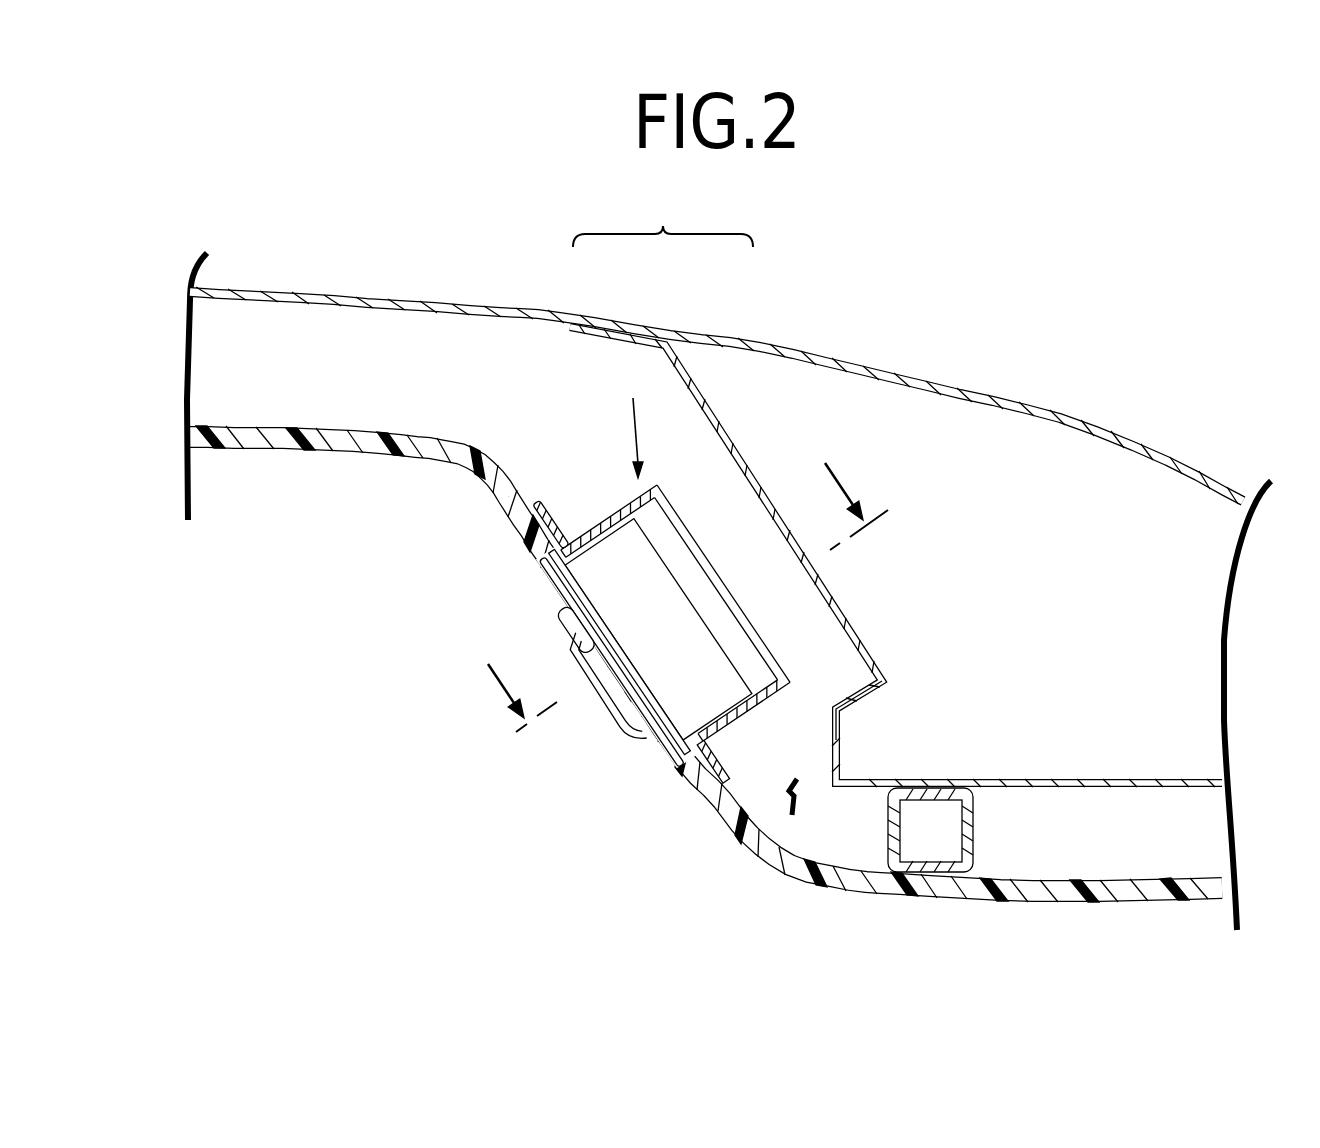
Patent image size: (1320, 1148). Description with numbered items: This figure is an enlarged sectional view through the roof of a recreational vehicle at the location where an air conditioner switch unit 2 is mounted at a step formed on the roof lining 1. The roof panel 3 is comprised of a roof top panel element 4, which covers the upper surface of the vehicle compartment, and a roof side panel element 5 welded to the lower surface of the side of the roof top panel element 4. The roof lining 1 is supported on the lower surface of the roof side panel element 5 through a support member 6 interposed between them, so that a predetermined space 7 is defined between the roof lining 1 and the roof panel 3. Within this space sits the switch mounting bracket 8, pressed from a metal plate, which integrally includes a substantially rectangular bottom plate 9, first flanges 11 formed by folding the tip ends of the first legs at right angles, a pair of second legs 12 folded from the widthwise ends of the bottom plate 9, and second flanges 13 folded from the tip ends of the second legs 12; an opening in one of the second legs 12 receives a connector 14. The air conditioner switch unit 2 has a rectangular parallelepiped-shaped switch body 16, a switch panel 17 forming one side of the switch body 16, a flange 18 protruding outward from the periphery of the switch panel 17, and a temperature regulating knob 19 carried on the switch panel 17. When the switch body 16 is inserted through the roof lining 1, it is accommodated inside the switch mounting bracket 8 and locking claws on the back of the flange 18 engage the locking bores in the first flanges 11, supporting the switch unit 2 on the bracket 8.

The roof lining 1 is at (339, 458).
The air conditioner switch unit 2 is at (661, 762).
The roof panel 3 is at (672, 457).
The roof top panel element 4 is at (518, 312).
The roof side panel element 5 is at (703, 392).
The support member 6 is at (974, 842).
The space 7 is at (449, 385).
The switch mounting bracket 8 is at (631, 418).
The bottom plate 9 is at (723, 588).
The first flanges 11 is at (560, 567).
The second legs 12 is at (600, 514).
The second flanges 13 is at (541, 500).
The connector 14 is at (840, 716).
The switch body 16 is at (700, 680).
The switch panel 17 is at (606, 642).
The flange 18 is at (537, 568).
The temperature regulating knob 19 is at (596, 688).